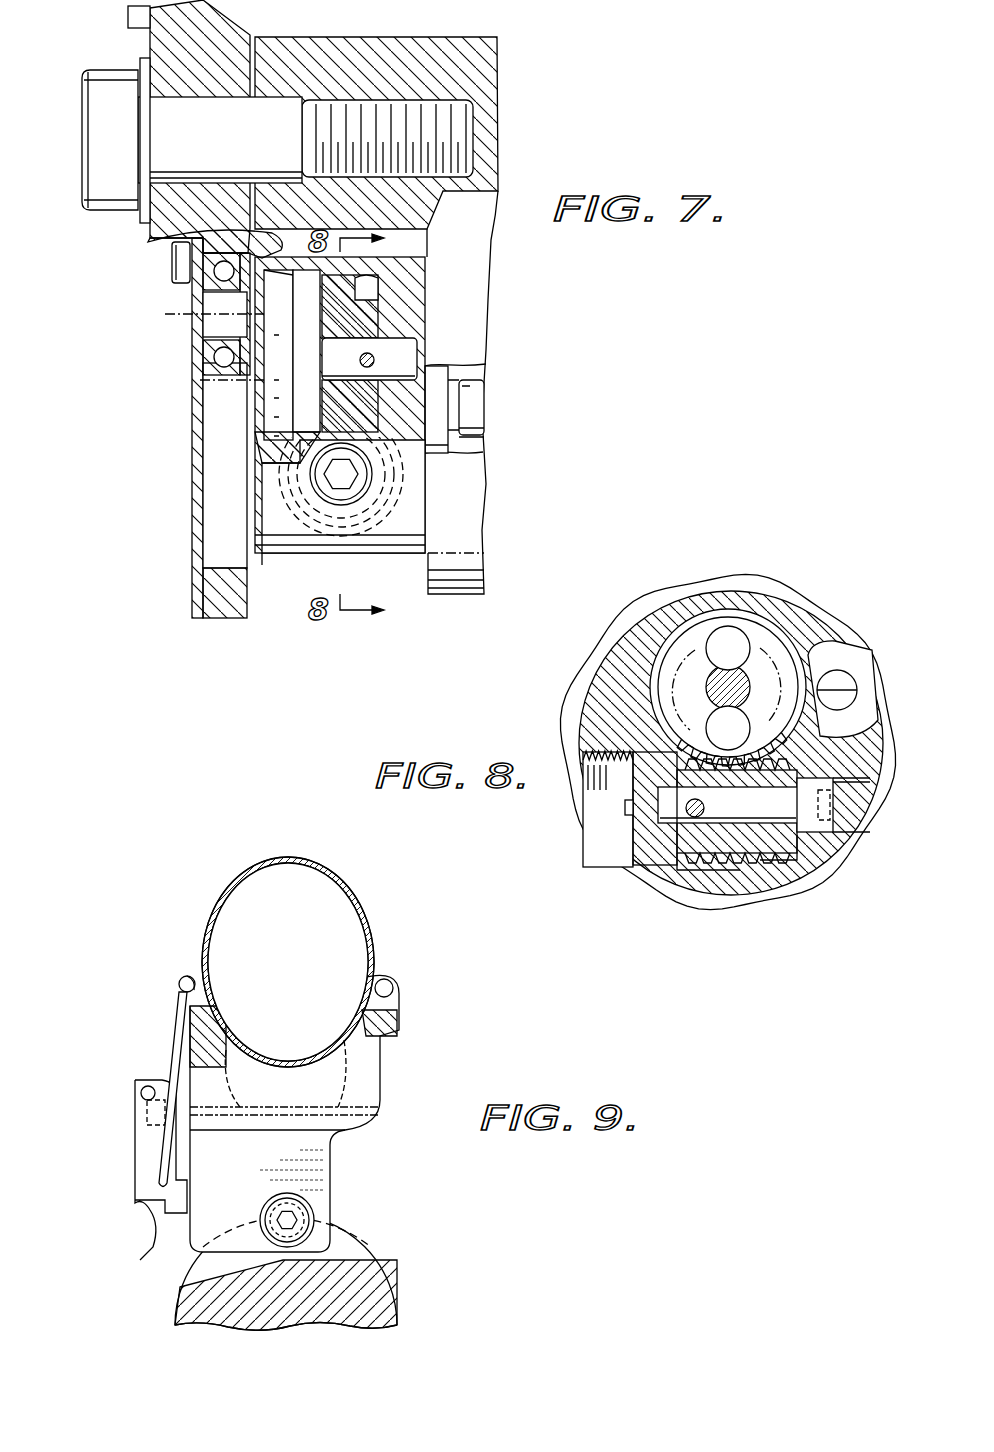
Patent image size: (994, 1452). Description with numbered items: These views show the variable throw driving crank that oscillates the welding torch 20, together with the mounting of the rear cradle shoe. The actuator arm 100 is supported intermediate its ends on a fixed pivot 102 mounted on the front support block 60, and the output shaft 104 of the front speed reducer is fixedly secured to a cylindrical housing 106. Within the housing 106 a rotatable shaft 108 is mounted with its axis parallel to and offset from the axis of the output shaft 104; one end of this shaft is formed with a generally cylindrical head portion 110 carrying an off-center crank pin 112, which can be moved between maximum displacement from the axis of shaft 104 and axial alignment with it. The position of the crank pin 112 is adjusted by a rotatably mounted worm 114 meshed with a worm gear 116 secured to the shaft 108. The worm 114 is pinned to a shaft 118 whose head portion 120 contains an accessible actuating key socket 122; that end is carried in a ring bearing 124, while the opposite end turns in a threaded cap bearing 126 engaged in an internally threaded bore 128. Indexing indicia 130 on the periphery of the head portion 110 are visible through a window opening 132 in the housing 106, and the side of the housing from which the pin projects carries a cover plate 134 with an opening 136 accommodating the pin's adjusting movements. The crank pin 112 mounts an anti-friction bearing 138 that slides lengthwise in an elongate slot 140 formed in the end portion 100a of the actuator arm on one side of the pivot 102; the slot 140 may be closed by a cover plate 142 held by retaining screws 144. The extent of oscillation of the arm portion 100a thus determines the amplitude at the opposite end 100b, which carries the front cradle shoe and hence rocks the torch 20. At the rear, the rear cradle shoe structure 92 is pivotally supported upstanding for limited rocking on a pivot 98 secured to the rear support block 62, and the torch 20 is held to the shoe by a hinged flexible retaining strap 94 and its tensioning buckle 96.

In FIG. 9, the welding torch 20 is at (228, 918).
In FIG. 7, the front support block 60 is at (487, 68).
In FIG. 9, the rear support block 62 is at (362, 1300).
In FIG. 9, the rear cradle shoe structure 92 is at (388, 1073).
In FIG. 9, the hinged flexible retaining strap 94 is at (275, 858).
In FIG. 9, the tensioning buckle 96 is at (124, 1146).
In FIG. 9, the pivot 98 is at (290, 1220).
In FIG. 7, the actuator arm 100 is at (172, 221).
In FIG. 7, the end portion of actuator arm 100a is at (210, 600).
In FIG. 7, the opposite end of actuator arm 100b is at (127, 14).
In FIG. 7, the fixed pivot 102 is at (277, 140).
In FIG. 7, the output shaft 104 is at (468, 415).
In FIG. 7, the cylindrical housing 106 is at (405, 548).
In FIG. 8, the cylindrical housing 106 is at (768, 608).
In FIG. 7, the rotatable shaft 108 is at (400, 350).
In FIG. 8, the rotatable shaft 108 is at (742, 680).
In FIG. 7, the head portion 110 is at (300, 303).
In FIG. 8, the head portion 110 is at (760, 650).
In FIG. 7, the crank pin 112 is at (220, 302).
In FIG. 8, the crank pin 112 is at (724, 689).
In FIG. 7, the worm 114 is at (375, 462).
In FIG. 8, the worm 114 is at (722, 855).
In FIG. 7, the worm gear 116 is at (365, 325).
In FIG. 8, the worm gear 116 is at (790, 756).
In FIG. 8, the shaft 118 is at (760, 815).
In FIG. 7, the head portion 120 is at (330, 488).
In FIG. 8, the head portion 120 is at (822, 805).
In FIG. 7, the actuating key socket 122 is at (345, 490).
In FIG. 8, the actuating key socket 122 is at (822, 800).
In FIG. 8, the ring bearing 124 is at (800, 860).
In FIG. 8, the threaded cap bearing 126 is at (640, 840).
In FIG. 8, the internally threaded bore 128 is at (607, 775).
In FIG. 7, the indexing indicia 130 is at (275, 412).
In FIG. 7, the window opening 132 is at (195, 240).
In FIG. 7, the cover plate 134 is at (262, 556).
In FIG. 8, the cover plate 134 is at (838, 650).
In FIG. 7, the opening 136 is at (258, 430).
In FIG. 7, the anti-friction bearing 138 is at (217, 350).
In FIG. 7, the elongate slot 140 is at (213, 527).
In FIG. 7, the cover plate 142 is at (197, 375).
In FIG. 7, the retaining screws 144 is at (180, 272).